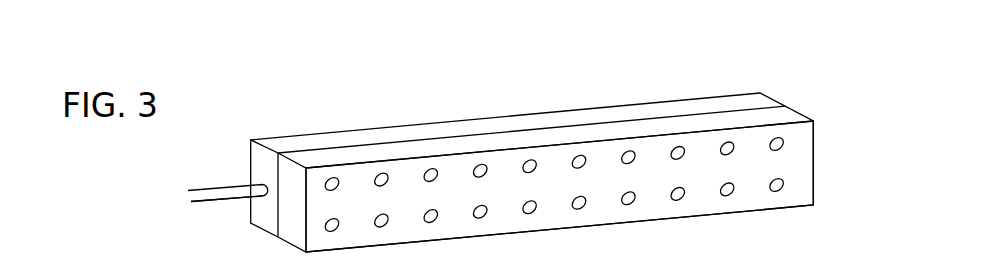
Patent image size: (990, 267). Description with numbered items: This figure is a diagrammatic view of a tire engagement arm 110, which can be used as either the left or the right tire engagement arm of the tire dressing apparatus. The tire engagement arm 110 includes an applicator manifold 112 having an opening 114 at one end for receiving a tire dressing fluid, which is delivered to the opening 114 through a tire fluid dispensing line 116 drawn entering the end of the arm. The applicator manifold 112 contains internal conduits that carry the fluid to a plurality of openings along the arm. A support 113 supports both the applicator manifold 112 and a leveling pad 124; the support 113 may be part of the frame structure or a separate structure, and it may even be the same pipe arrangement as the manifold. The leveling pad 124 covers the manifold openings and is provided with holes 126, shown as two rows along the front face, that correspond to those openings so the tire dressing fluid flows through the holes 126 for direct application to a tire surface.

The tire engagement arm 110 is at (856, 103).
The applicator manifold 112 is at (472, 104).
The support 113 is at (660, 108).
The opening 114 is at (262, 183).
The tire fluid dispensing line 116 is at (212, 196).
The leveling pad 124 is at (807, 170).
The holes 126 is at (779, 189).